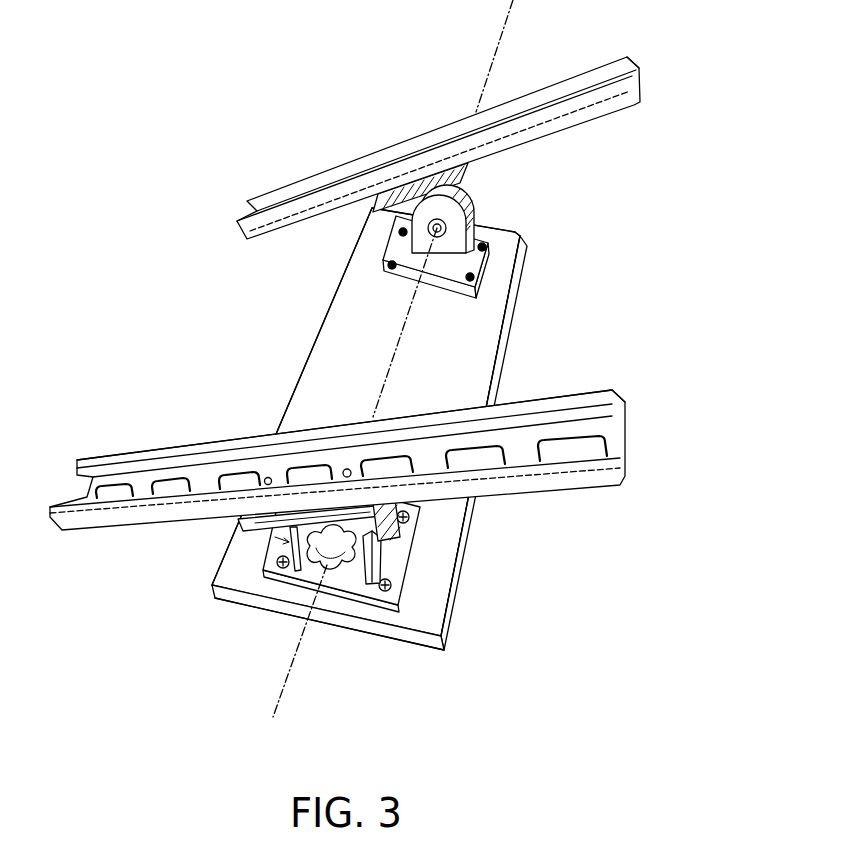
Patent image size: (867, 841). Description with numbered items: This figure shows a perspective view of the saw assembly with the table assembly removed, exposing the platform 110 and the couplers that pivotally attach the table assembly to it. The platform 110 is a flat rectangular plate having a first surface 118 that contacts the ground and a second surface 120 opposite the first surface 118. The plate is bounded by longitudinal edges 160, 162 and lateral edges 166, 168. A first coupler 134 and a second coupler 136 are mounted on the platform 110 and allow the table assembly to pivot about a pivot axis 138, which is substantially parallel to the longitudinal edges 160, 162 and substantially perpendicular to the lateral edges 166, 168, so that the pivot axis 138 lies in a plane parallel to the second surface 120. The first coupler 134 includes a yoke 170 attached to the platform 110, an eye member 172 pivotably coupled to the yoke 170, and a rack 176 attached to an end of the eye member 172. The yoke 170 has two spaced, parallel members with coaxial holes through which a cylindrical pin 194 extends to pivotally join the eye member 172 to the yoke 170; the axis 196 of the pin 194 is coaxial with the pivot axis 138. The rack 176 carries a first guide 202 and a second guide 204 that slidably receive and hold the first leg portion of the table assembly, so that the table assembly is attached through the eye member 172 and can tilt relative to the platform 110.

The platform 110 is at (447, 613).
The first surface 118 is at (400, 645).
The second surface 120 is at (453, 378).
The first coupler 134 is at (258, 537).
The second coupler 136 is at (395, 238).
The pivot axis 138 is at (293, 652).
The longitudinal edge 160 is at (323, 320).
The longitudinal edge 162 is at (507, 308).
The lateral edge 166 is at (338, 612).
The lateral edge 168 is at (503, 222).
The yoke 170 is at (380, 557).
The eye member 172 is at (410, 502).
The rack 176 is at (385, 419).
The pin 194 is at (323, 567).
The axis 196 is at (272, 710).
The first guide 202 is at (598, 460).
The second guide 204 is at (567, 392).